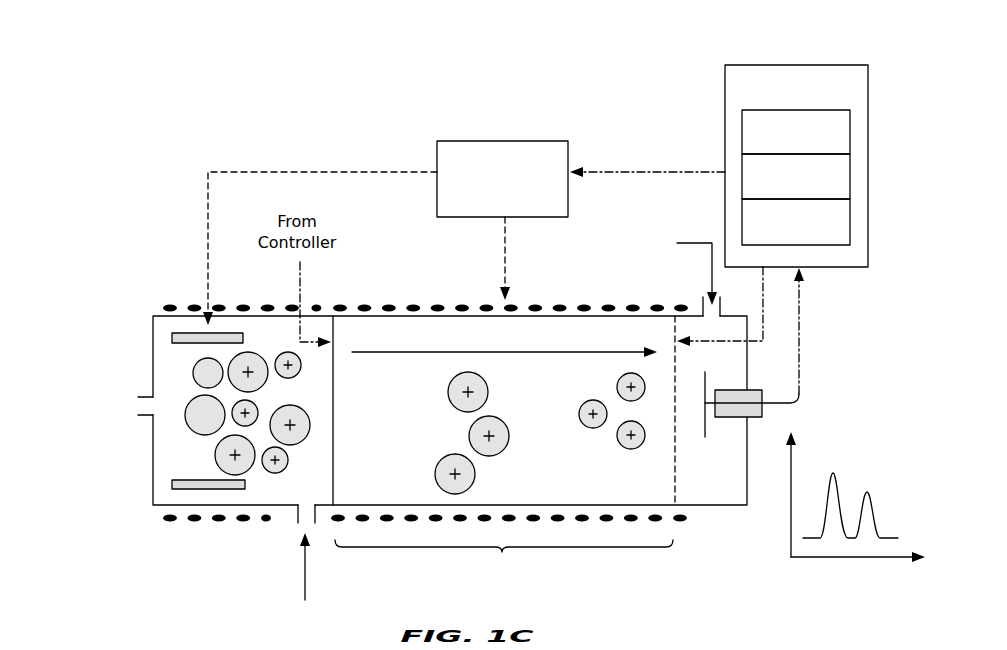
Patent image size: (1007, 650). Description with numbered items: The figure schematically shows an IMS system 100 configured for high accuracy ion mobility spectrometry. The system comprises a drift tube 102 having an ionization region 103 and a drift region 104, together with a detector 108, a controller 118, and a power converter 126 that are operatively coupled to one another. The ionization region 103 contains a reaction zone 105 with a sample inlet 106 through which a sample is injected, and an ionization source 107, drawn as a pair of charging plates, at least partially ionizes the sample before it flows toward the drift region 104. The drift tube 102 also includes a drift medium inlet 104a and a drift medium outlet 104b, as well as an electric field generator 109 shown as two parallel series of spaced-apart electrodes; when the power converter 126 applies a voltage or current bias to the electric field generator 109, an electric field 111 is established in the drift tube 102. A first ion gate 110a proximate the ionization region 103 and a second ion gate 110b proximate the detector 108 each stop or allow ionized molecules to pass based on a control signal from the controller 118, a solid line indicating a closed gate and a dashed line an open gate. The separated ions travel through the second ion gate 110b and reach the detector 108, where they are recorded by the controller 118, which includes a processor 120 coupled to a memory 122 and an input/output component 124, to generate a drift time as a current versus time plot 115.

The IMS system 100 is at (132, 104).
The drift tube 102 is at (105, 239).
The ionization region 103 is at (177, 316).
The drift region 104 is at (410, 241).
The drift medium inlet 104a is at (703, 306).
The drift medium outlet 104b is at (143, 415).
The reaction zone 105 is at (158, 372).
The sample inlet 106 is at (296, 519).
The ionization source 107 is at (170, 483).
The detector 108 is at (798, 403).
The electric field generator 109 is at (478, 306).
The first ion gate 110a is at (336, 468).
The second ion gate 110b is at (675, 442).
The electric field 111 is at (403, 352).
The current versus time plot 115 is at (855, 446).
The controller 118 is at (725, 80).
The processor 120 is at (852, 130).
The memory 122 is at (852, 176).
The input/output component 124 is at (852, 220).
The power converter 126 is at (437, 153).